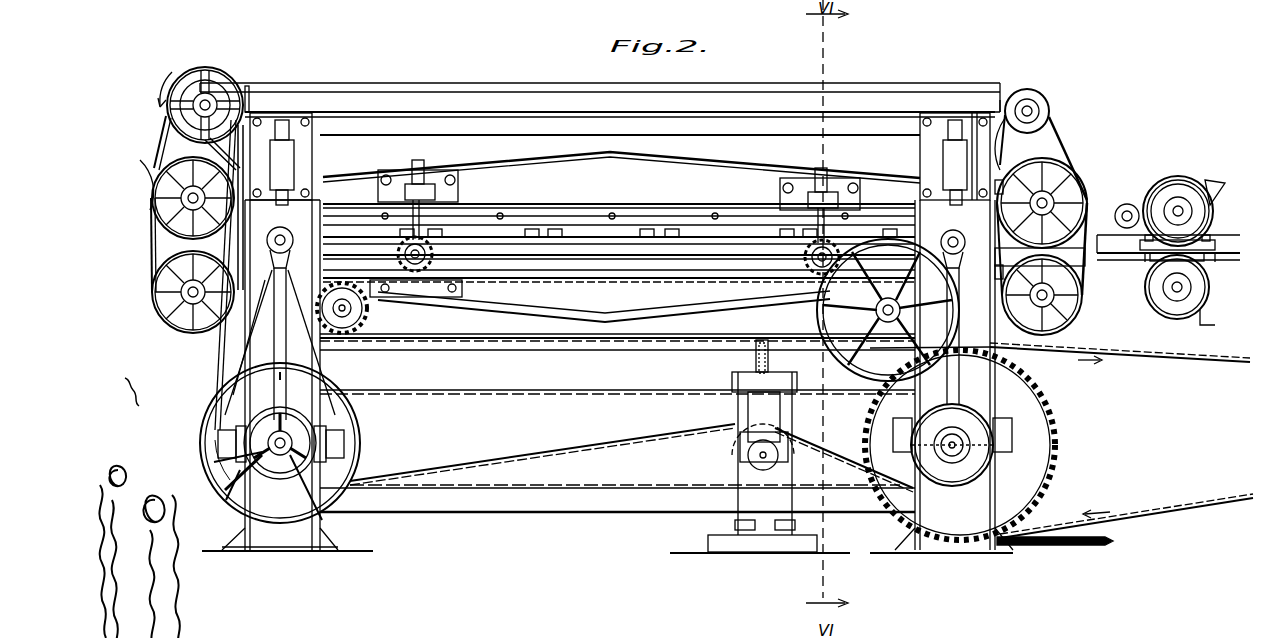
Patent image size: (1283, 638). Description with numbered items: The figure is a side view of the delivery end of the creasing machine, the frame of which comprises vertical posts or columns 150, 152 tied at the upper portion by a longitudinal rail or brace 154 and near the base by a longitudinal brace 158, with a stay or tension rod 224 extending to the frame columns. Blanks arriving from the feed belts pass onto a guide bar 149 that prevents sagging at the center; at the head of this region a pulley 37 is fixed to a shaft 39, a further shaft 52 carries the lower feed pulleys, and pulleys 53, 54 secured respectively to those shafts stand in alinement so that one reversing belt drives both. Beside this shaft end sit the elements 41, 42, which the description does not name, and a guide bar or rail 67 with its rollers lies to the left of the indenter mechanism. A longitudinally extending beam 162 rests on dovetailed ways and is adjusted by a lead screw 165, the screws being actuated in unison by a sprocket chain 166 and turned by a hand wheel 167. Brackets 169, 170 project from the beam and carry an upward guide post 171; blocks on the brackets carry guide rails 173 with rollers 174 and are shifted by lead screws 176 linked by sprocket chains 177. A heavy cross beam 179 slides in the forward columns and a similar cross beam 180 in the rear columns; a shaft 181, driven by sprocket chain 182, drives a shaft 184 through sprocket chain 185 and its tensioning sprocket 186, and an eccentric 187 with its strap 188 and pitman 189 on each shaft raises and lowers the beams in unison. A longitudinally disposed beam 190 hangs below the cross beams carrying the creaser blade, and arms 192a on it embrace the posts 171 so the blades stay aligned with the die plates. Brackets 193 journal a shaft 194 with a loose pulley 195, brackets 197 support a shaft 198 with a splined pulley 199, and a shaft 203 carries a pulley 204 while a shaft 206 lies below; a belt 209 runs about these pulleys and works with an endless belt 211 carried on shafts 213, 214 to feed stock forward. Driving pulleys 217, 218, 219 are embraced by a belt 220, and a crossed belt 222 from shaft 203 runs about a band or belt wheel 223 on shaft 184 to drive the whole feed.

The pulley 37 is at (1192, 178).
The shaft 39 is at (1183, 205).
The guide 41 is at (1222, 200).
The roller 42 is at (1135, 205).
The shaft 52 is at (1178, 290).
The pulley 53 is at (1210, 218).
The pulley 54 is at (1160, 300).
The guide bar or rail 67 is at (1168, 241).
The guide bar 149 is at (1095, 250).
The vertical post or column 150 is at (945, 540).
The vertical post or column 152 is at (318, 532).
The longitudinal rail or brace 154 is at (455, 128).
The longitudinal brace 158 is at (617, 498).
The longitudinally extending beam 162 is at (620, 285).
The lead screw 165 is at (350, 312).
The sprocket chain 166 is at (655, 340).
The hand wheel 167 is at (865, 318).
The bracket 169 is at (427, 290).
The bracket 170 is at (790, 296).
The guide post 171 is at (410, 230).
The guide rail 173 is at (580, 235).
The roller 174 is at (690, 240).
The lead screw 176 is at (402, 250).
The sprocket chain 177 is at (685, 270).
The cross beam 179 is at (945, 160).
The cross beam 180 is at (290, 165).
The shaft 181 is at (992, 468).
The sprocket chain 182 is at (1160, 360).
The shaft 184 is at (272, 445).
The sprocket chain 185 is at (618, 390).
The tensioning sprocket 186 is at (735, 456).
The eccentric 187 is at (243, 428).
The strap 188 is at (345, 408).
The pitman 189 is at (310, 352).
The longitudinally disposed beam 190 is at (619, 191).
The arm 192a is at (440, 198).
The bracket 193 is at (988, 112).
The shaft 194 is at (1033, 108).
The pulley 195 is at (1058, 115).
The bracket 197 is at (1010, 190).
The shaft 198 is at (1058, 203).
The pulley 199 is at (1060, 185).
The shaft 203 is at (212, 108).
The pulley 204 is at (215, 98).
The shaft 206 is at (175, 190).
The belt 209 is at (472, 84).
The endless belt 211 is at (228, 300).
The shaft 213 is at (1058, 296).
The shaft 214 is at (178, 325).
The driving pulley 217 is at (190, 70).
The driving pulley 218 is at (165, 200).
The driving pulley 219 is at (170, 300).
The belt 220 is at (172, 248).
The crossed belt 222 is at (210, 400).
The band or belt wheel 223 is at (228, 478).
The stay or tension rod 224 is at (1055, 545).